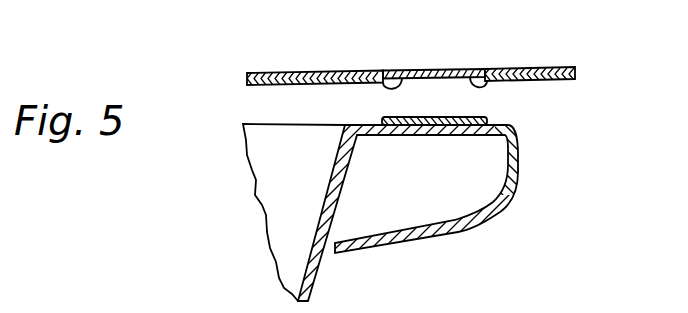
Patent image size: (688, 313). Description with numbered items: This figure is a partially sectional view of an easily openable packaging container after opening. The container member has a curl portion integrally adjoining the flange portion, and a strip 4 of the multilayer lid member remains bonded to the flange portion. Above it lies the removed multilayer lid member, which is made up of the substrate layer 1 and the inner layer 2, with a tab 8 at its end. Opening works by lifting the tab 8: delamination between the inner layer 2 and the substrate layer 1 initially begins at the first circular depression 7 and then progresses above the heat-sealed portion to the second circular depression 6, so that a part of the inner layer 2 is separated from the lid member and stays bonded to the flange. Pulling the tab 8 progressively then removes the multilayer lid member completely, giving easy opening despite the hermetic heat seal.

The substrate layer 1 is at (430, 60).
The inner layer 2 is at (430, 60).
The sealing strip 4 is at (430, 137).
The second circular depression 6 is at (401, 80).
The first circular depression 7 is at (478, 68).
The tab 8 is at (540, 64).